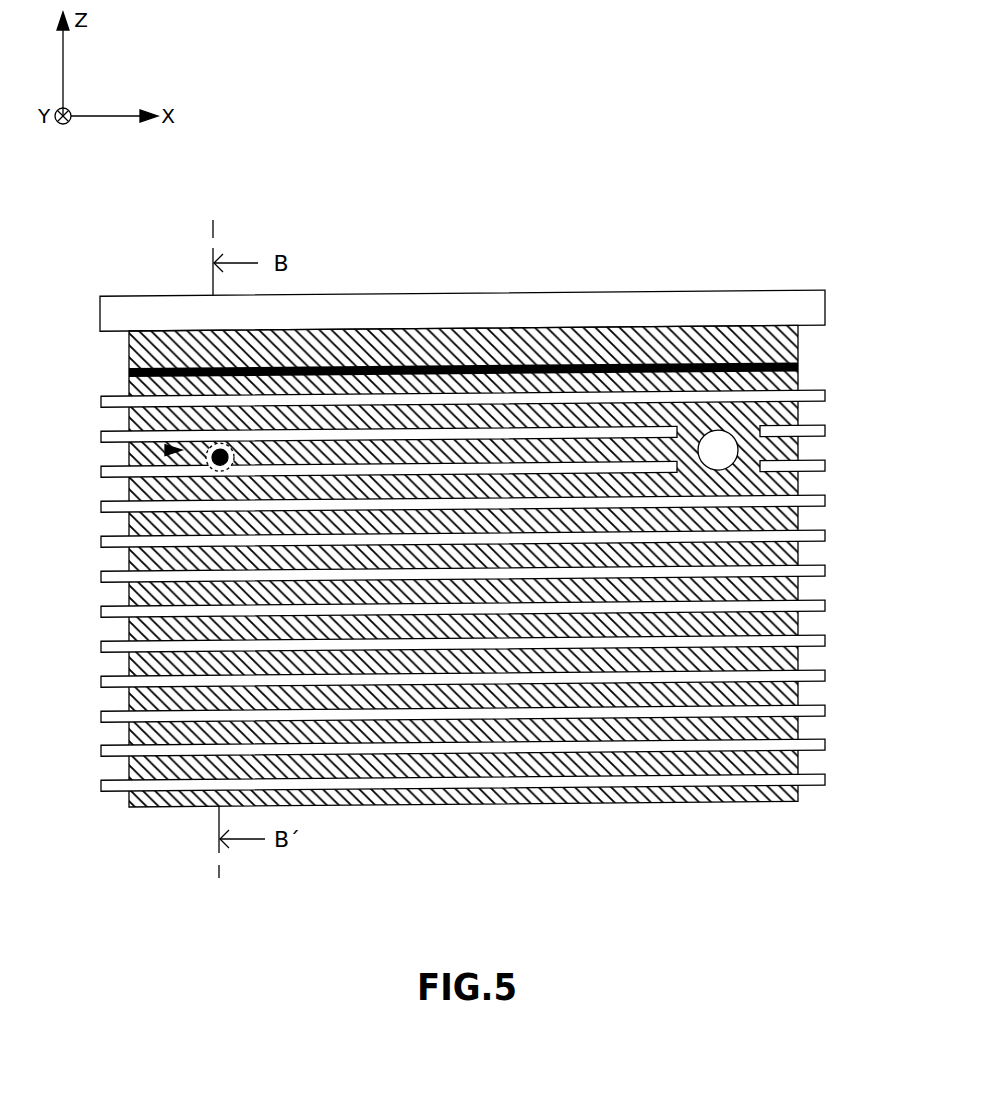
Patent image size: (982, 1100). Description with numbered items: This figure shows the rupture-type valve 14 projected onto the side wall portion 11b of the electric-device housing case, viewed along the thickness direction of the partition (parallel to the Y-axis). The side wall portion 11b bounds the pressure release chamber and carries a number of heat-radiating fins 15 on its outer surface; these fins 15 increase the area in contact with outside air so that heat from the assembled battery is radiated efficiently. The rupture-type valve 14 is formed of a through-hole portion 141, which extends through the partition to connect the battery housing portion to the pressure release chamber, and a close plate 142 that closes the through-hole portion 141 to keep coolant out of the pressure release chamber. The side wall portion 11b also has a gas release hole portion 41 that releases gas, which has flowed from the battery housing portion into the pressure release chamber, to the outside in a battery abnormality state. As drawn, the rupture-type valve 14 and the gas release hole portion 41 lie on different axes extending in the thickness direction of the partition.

The through-hole portion 141 is at (204, 449).
The rupture-type valve 14 is at (138, 448).
The close plate 142 is at (206, 463).
The heat-radiating fins 15 is at (122, 505).
The gas release hole portion 41 is at (739, 452).
The side wall portion 11b is at (802, 604).